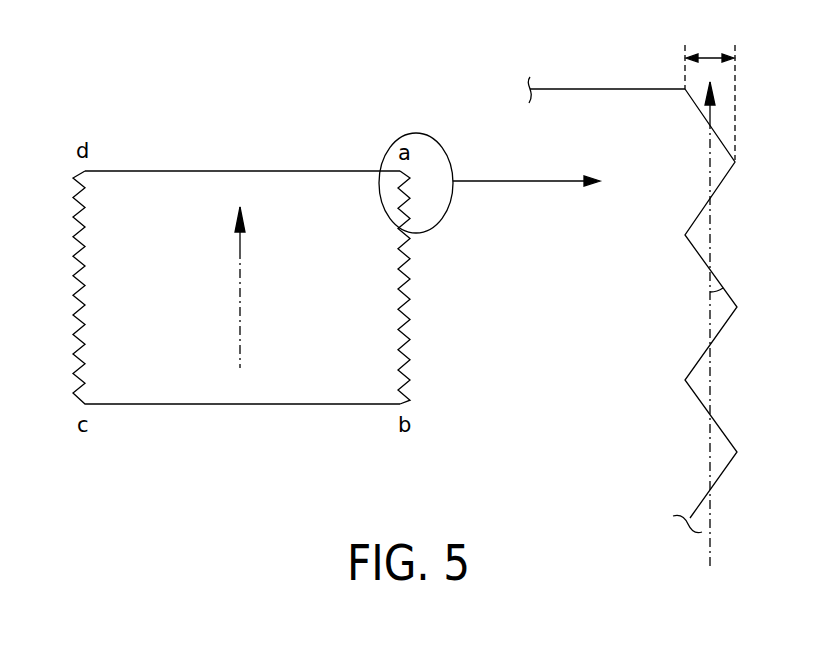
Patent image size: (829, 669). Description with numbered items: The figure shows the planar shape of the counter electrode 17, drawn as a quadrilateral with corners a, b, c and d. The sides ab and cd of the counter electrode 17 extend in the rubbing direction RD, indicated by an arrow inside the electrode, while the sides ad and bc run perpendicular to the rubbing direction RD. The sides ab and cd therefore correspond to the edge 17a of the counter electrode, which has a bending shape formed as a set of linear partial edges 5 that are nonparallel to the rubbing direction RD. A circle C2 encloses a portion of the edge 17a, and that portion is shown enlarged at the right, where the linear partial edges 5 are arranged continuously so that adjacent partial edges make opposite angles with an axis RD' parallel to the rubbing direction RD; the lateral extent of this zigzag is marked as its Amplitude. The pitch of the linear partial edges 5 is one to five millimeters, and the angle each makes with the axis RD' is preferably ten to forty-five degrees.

The counter electrode 17 is at (198, 170).
The linear partial edges 5 is at (410, 275).
The edge of the counter electrode 17a is at (420, 340).
The circle C2 is at (445, 152).
The rubbing direction RD is at (268, 287).
The axis parallel to the rubbing direction RD' is at (744, 324).
The amplitude of zigzag Amplitude is at (713, 88).